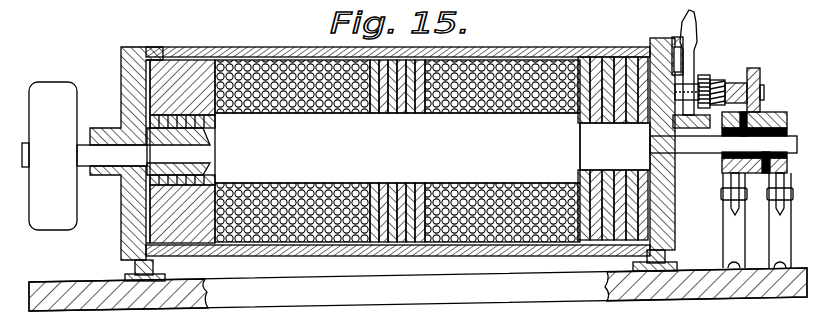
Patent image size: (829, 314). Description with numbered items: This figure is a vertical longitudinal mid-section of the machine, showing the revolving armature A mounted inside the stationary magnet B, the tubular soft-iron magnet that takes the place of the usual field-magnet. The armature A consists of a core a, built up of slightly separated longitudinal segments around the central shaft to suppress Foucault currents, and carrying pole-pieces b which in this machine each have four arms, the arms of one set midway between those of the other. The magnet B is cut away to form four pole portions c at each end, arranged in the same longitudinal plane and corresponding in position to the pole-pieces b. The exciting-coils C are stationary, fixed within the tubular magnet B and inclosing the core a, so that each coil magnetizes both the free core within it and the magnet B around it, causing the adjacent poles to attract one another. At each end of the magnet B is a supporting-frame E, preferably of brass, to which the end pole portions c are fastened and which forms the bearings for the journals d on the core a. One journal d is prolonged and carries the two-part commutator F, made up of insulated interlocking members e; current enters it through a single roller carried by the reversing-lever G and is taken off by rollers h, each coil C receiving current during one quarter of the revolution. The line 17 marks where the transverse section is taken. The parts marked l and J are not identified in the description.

The supporting-frame E is at (126, 96).
The pole-pieces b is at (128, 190).
The stationary magnet B is at (398, 145).
The section line 17 is at (637, 128).
The end plate l is at (182, 151).
The pole portions c is at (181, 111).
The exciting-coils C is at (302, 108).
The revolving armature A is at (434, 151).
The core a is at (397, 148).
The commutator members e is at (614, 134).
The journals d is at (437, 151).
The commutator F is at (759, 132).
The reversing-lever G is at (691, 69).
The worm gear J is at (733, 88).
The rollers h is at (755, 220).